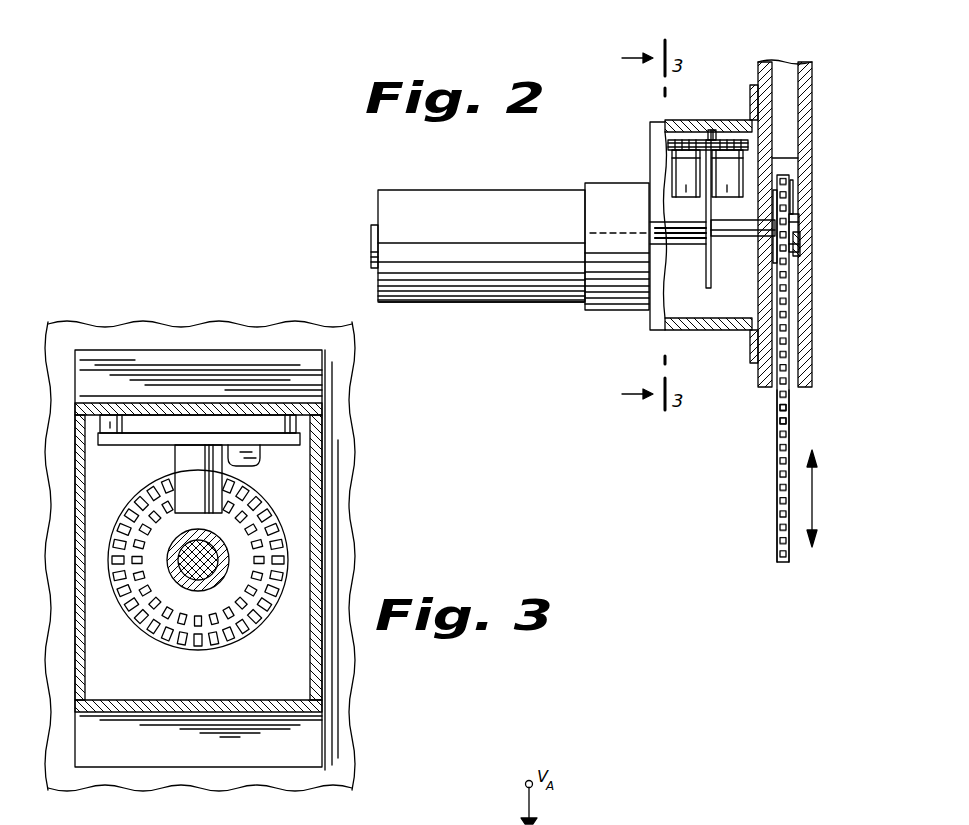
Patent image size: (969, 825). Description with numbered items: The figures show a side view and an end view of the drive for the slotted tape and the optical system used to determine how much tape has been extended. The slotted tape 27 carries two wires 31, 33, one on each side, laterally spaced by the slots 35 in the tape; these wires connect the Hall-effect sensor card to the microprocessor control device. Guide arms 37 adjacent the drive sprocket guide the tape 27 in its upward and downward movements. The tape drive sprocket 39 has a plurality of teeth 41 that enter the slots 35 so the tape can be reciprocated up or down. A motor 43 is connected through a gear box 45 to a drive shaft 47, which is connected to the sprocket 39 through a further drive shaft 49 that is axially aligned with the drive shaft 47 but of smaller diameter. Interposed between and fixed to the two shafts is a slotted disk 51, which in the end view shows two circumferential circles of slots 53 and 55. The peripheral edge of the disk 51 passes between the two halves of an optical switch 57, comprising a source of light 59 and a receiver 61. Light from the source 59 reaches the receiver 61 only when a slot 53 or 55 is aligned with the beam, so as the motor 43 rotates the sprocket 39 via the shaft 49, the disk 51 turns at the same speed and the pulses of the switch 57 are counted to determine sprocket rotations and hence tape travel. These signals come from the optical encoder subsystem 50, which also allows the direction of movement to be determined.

In FIG. 2, the slotted tape 27 is at (777, 506).
In FIG. 2, the wire 31 is at (788, 433).
In FIG. 2, the wire 33 is at (775, 448).
In FIG. 2, the slots 35 is at (783, 413).
In FIG. 2, the guide arms 37 is at (790, 172).
In FIG. 2, the tape drive sprocket 39 is at (795, 243).
In FIG. 2, the teeth 41 is at (793, 228).
In FIG. 2, the motor 43 is at (482, 278).
In FIG. 2, the gear box 45 is at (617, 195).
In FIG. 2, the drive shaft 47 is at (652, 250).
In FIG. 3, the drive shaft 47 is at (226, 540).
In FIG. 2, the further drive shaft 49 is at (755, 228).
In FIG. 3, the further drive shaft 49 is at (232, 562).
In FIG. 2, the optical encoder subsystem 50 is at (543, 306).
In FIG. 2, the slotted disk 51 is at (708, 272).
In FIG. 3, the slotted disk 51 is at (193, 650).
In FIG. 3, the slots 53 is at (258, 612).
In FIG. 3, the slots 55 is at (228, 620).
In FIG. 2, the optical switch 57 is at (688, 174).
In FIG. 2, the source of light 59 is at (675, 177).
In FIG. 3, the source of light 59 is at (213, 487).
In FIG. 2, the receiver 61 is at (730, 178).